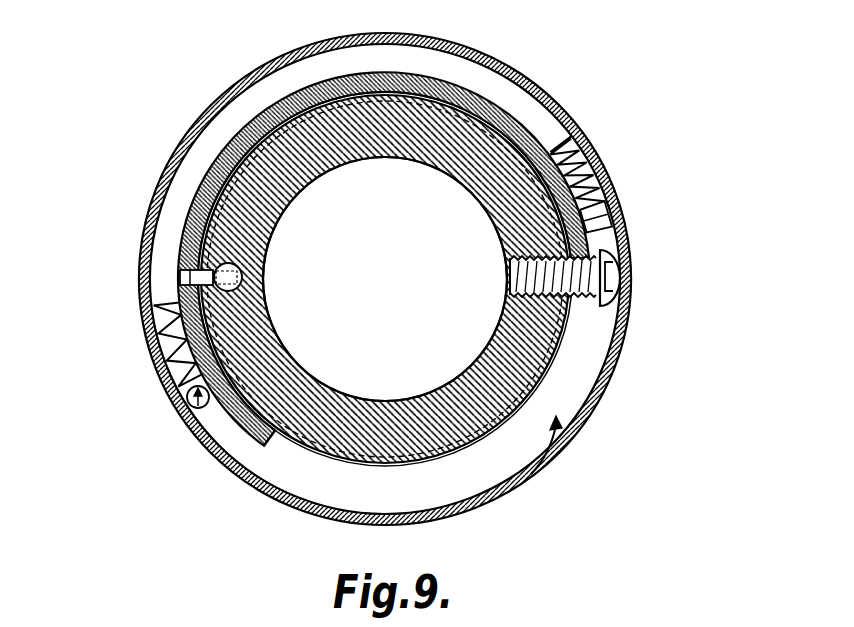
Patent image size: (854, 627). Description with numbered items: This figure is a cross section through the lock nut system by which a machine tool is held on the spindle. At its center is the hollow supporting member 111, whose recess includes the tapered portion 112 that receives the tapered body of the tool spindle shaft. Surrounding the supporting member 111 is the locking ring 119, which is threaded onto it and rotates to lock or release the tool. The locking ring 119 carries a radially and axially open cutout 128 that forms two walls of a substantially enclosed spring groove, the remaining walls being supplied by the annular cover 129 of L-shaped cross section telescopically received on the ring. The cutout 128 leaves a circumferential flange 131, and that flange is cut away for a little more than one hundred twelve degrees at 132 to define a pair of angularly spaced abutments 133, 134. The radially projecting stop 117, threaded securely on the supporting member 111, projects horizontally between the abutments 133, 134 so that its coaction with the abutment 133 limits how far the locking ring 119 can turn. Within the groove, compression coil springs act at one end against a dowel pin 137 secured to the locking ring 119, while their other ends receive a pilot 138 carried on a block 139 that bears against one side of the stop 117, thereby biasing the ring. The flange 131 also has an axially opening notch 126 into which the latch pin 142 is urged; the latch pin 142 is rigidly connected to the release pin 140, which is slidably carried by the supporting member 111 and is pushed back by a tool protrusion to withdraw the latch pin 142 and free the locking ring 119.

The hollow supporting member 111 is at (490, 133).
The tapered portion 112 is at (330, 390).
The radially projecting stop 117 is at (606, 302).
The locking ring 119 is at (558, 437).
The axially opening notch 126 is at (180, 279).
The cutout 128 is at (227, 113).
The annular cover 129 is at (482, 52).
The circumferential flange 131 is at (283, 96).
The cut away portion 132 is at (513, 440).
The abutment 133 is at (613, 273).
The abutment 134 is at (272, 444).
The dowel pin 137 is at (196, 412).
The pilot 138 is at (592, 145).
The block 139 is at (606, 226).
The release pin 140 is at (242, 278).
The latch pin 142 is at (193, 269).